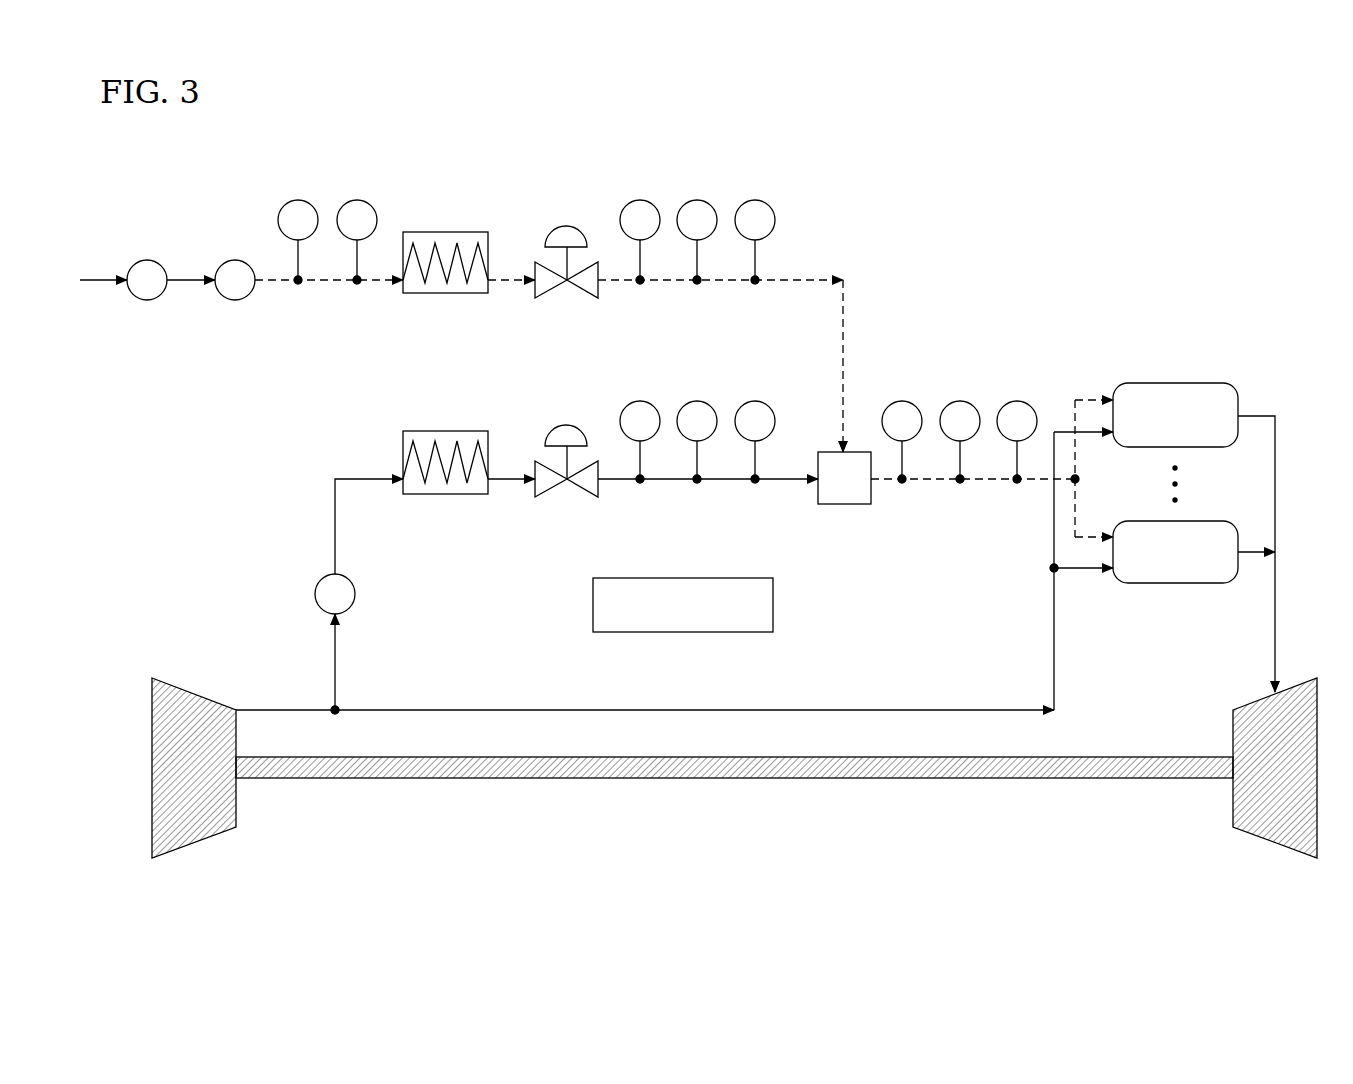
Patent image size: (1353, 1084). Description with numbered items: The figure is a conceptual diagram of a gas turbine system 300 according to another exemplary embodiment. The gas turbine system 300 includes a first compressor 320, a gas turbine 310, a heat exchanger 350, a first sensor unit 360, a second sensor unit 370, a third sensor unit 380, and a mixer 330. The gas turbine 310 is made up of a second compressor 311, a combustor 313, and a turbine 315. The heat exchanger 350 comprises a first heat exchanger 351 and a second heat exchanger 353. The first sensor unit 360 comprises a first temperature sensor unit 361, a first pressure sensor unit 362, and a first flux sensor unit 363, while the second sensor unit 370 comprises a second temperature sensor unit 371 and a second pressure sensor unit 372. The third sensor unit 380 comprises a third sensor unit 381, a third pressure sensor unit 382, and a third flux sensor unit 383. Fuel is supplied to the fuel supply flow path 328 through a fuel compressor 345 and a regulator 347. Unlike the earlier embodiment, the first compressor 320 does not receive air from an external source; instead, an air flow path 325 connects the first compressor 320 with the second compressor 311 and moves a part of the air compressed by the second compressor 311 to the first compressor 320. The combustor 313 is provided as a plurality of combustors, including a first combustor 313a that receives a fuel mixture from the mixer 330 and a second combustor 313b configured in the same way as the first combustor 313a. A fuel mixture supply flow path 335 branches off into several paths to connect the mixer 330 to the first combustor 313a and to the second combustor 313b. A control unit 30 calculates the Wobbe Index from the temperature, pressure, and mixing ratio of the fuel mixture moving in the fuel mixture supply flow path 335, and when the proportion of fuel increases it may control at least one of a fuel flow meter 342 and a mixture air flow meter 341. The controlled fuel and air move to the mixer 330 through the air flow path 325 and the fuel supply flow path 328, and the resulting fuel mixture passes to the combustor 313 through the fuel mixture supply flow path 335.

The gas turbine system 300 is at (998, 206).
The gas turbine 310 is at (252, 859).
The second compressor 311 is at (236, 795).
The combustor 313 is at (1159, 619).
The first combustor 313a is at (1143, 447).
The second combustor 313b is at (1175, 598).
The turbine 315 is at (1233, 795).
The first compressor 320 is at (355, 594).
The air flow path 325 is at (786, 483).
The fuel supply flow path 328 is at (808, 276).
The mixer 330 is at (845, 504).
The fuel mixture supply flow path 335 is at (985, 483).
The mixture air flow meter 341 is at (567, 446).
The fuel flow meter 342 is at (567, 226).
The fuel compressor 345 is at (149, 260).
The regulator 347 is at (237, 260).
The heat exchanger 350 is at (470, 363).
The first heat exchanger 351 is at (446, 300).
The second heat exchanger 353 is at (445, 434).
The first sensor unit 360 is at (697, 192).
The first temperature sensor unit 361 is at (755, 214).
The first pressure sensor unit 362 is at (697, 200).
The first flux sensor unit 363 is at (640, 200).
The second sensor unit 370 is at (327, 192).
The second temperature sensor unit 371 is at (357, 214).
The second pressure sensor unit 372 is at (298, 200).
The third sensor unit 380 is at (828, 389).
The third sensor unit 381 is at (886, 414).
The third pressure sensor unit 382 is at (697, 401).
The third flux sensor unit 383 is at (640, 401).
The control unit 30 is at (773, 605).